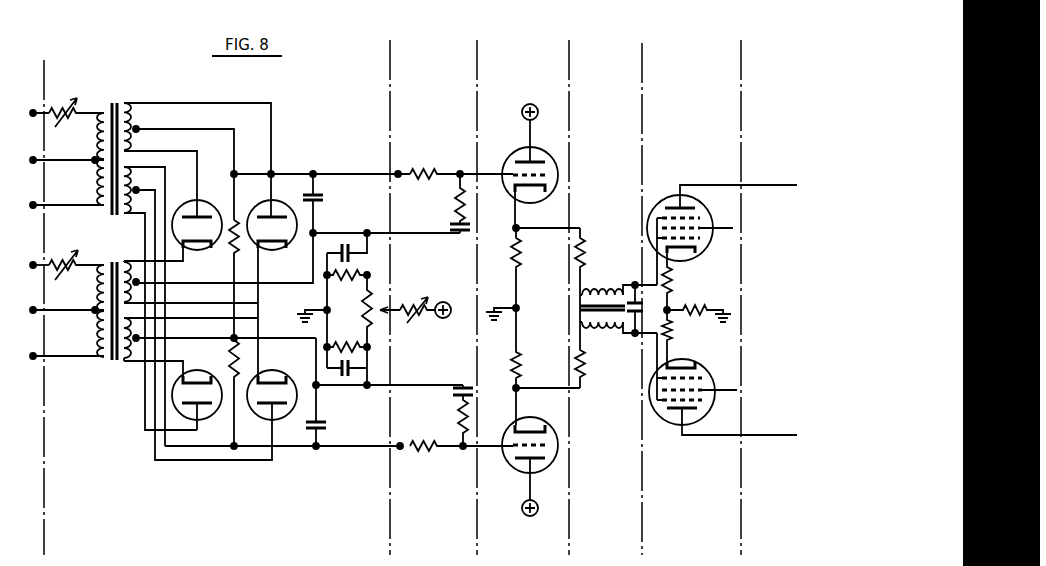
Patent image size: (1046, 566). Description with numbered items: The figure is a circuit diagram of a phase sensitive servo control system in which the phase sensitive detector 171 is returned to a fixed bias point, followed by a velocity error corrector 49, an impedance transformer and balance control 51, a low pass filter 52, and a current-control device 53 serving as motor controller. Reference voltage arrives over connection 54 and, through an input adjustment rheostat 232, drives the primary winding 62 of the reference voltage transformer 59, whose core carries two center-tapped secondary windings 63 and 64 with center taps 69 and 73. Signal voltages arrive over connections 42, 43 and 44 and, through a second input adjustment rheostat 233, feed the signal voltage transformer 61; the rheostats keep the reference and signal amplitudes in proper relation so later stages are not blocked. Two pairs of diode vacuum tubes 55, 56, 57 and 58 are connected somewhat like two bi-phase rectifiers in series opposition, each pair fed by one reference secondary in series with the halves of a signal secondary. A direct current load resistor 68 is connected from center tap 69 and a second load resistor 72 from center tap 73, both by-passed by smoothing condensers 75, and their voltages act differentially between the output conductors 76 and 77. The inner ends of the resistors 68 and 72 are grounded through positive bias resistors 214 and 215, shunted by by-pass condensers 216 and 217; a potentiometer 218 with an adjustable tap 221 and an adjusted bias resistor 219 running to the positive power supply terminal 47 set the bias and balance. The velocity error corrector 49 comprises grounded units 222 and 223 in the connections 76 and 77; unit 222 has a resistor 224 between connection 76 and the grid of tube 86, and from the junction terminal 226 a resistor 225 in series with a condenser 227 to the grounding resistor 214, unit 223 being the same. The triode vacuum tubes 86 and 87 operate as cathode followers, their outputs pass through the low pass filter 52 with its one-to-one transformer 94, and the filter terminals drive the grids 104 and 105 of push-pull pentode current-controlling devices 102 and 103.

The input adjustment rheostat 232 is at (53, 102).
The connection 54 is at (38, 162).
The primary winding 62 is at (92, 171).
The reference voltage transformer 59 is at (114, 103).
The secondary winding 63 is at (139, 104).
The center tap 69 is at (138, 128).
The center tap 73 is at (138, 190).
The secondary winding 64 is at (137, 214).
The diode vacuum tube 55 is at (191, 206).
The diode vacuum tube 56 is at (260, 209).
The diode vacuum tube 57 is at (210, 415).
The diode vacuum tube 58 is at (278, 415).
The direct current load resistor 68 is at (230, 250).
The direct current load resistor 72 is at (238, 340).
The connection 43 is at (33, 268).
The connection 42 is at (35, 311).
The connection 44 is at (35, 357).
The input adjustment rheostat 233 is at (93, 308).
The signal voltage transformer 61 is at (113, 362).
The smoothing condenser 75 is at (316, 200).
The conductor 76 is at (352, 174).
The conductor 77 is at (350, 446).
The by-pass condenser 216 is at (345, 245).
The positive bias resistor 214 is at (338, 278).
The positive bias resistor 215 is at (356, 337).
The by-pass condenser 217 is at (352, 370).
The potentiometer 218 is at (371, 327).
The adjusted bias resistor 219 is at (414, 320).
The adjustable tap 221 is at (382, 309).
The positive power supply terminal 47 is at (447, 303).
The velocity error corrector unit 222 is at (394, 160).
The resistor 224 is at (430, 180).
The resistor 225 is at (456, 203).
The condenser 227 is at (468, 237).
The junction terminal 226 is at (470, 170).
The velocity error corrector unit 223 is at (426, 437).
The triode vacuum tube 86 is at (538, 149).
The triode vacuum tube 87 is at (533, 473).
The transformer 94 is at (595, 290).
The current-controlling device 102 is at (662, 190).
The current-controlling device 103 is at (652, 418).
The control electrode 104 is at (702, 250).
The control electrode 105 is at (703, 368).
The phase sensitive detector 171 is at (234, 526).
The velocity error corrector 49 is at (437, 526).
The impedance transformer and balance control 51 is at (529, 550).
The low pass filter 52 is at (618, 528).
The current-control device 53 is at (707, 526).